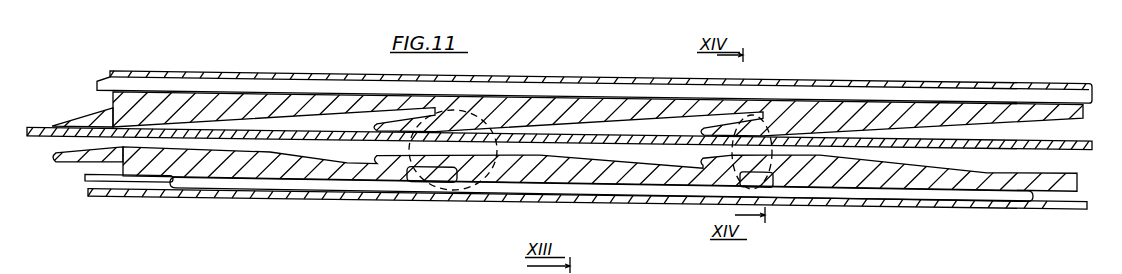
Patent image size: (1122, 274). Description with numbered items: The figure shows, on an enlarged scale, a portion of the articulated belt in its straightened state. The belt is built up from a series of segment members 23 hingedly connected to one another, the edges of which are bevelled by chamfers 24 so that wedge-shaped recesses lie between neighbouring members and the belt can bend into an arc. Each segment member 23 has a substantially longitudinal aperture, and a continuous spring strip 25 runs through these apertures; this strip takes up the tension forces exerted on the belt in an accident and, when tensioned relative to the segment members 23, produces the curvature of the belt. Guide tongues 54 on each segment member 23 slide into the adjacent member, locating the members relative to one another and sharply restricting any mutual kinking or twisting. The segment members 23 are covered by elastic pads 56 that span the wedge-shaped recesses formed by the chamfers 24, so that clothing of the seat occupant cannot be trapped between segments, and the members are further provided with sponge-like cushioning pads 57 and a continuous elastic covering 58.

The segment member 23 is at (318, 102).
The chamfer 24 is at (433, 147).
The spring strip 25 is at (955, 140).
The guide tongue 54 is at (77, 122).
The elastic pad 56 is at (153, 177).
The sponge-like cushioning pad 57 is at (200, 85).
The continuous elastic covering 58 is at (1047, 207).